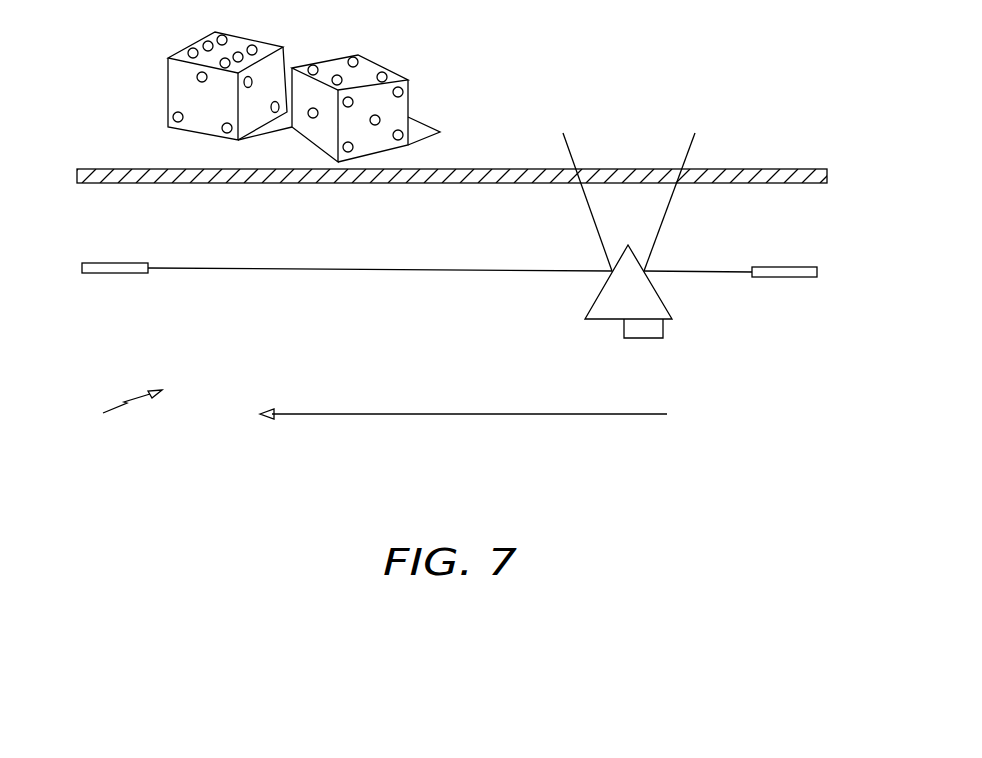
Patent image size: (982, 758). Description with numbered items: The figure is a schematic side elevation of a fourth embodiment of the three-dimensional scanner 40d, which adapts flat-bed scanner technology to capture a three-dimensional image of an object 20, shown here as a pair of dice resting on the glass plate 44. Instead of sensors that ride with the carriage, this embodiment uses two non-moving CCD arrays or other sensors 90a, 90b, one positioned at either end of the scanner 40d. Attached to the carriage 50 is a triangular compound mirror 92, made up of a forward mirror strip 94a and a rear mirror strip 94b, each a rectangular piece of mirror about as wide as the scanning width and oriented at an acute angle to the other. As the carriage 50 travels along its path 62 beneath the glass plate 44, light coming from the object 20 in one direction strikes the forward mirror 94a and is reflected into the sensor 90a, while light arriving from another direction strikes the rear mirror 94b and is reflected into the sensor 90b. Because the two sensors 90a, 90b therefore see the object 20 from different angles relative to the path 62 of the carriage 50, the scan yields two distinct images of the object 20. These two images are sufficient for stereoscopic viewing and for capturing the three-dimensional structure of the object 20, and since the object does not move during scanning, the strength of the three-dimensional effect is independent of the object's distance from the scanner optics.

The object 20 is at (370, 67).
The glass plate 44 is at (115, 172).
The sensor 90a is at (102, 272).
The sensor 90b is at (802, 277).
The triangular compound mirror 92 is at (607, 312).
The forward mirror strip 94a is at (588, 290).
The rear mirror strip 94b is at (663, 287).
The carriage 50 is at (652, 337).
The 3-D scanner 40d is at (107, 414).
The path 62 is at (372, 412).